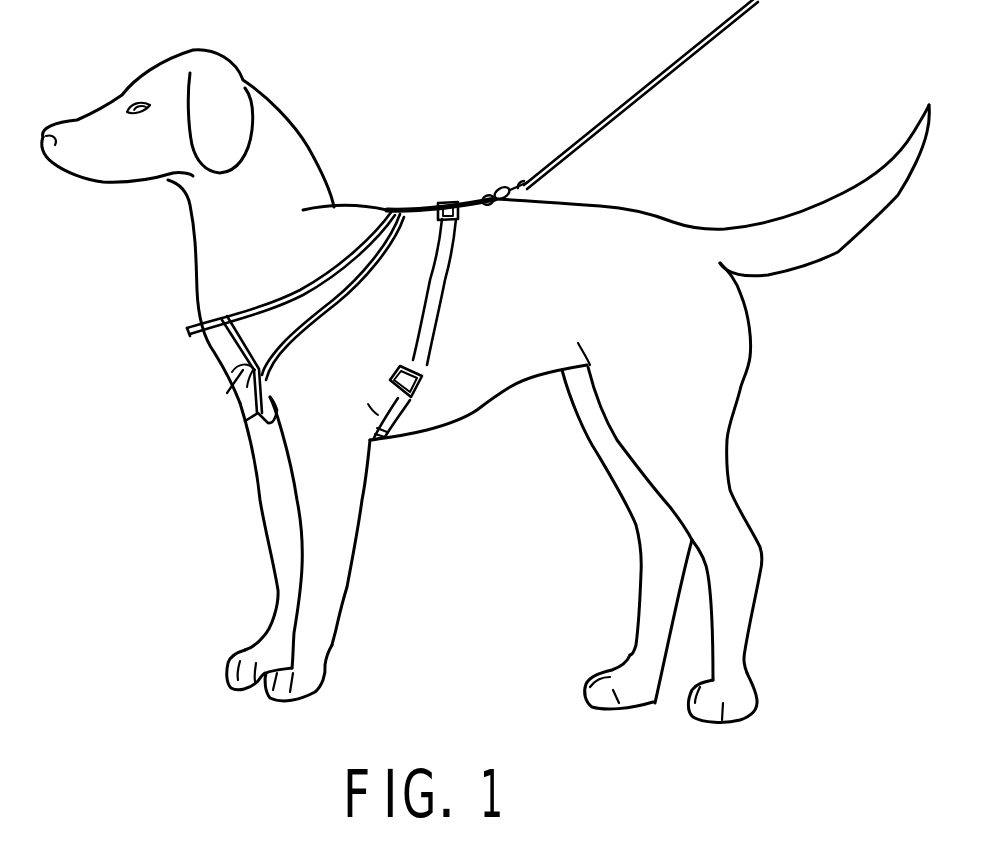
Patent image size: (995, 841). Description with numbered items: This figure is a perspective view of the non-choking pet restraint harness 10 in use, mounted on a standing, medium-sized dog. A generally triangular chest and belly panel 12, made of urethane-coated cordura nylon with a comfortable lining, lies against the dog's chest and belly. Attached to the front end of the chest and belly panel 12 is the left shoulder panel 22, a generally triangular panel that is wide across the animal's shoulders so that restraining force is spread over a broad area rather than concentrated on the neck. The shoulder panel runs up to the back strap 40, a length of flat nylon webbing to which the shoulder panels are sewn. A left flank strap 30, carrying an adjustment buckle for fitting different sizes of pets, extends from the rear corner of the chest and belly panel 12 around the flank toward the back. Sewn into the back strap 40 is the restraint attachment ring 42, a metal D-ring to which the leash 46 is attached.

The non-choking pet restraint harness 10 is at (151, 370).
The chest and belly panel 12 is at (230, 389).
The left shoulder panel 22 is at (247, 316).
The left flank strap 30 is at (422, 345).
The back strap 40 is at (420, 210).
The restraint attachment ring 42 is at (492, 193).
The leash 46 is at (608, 115).